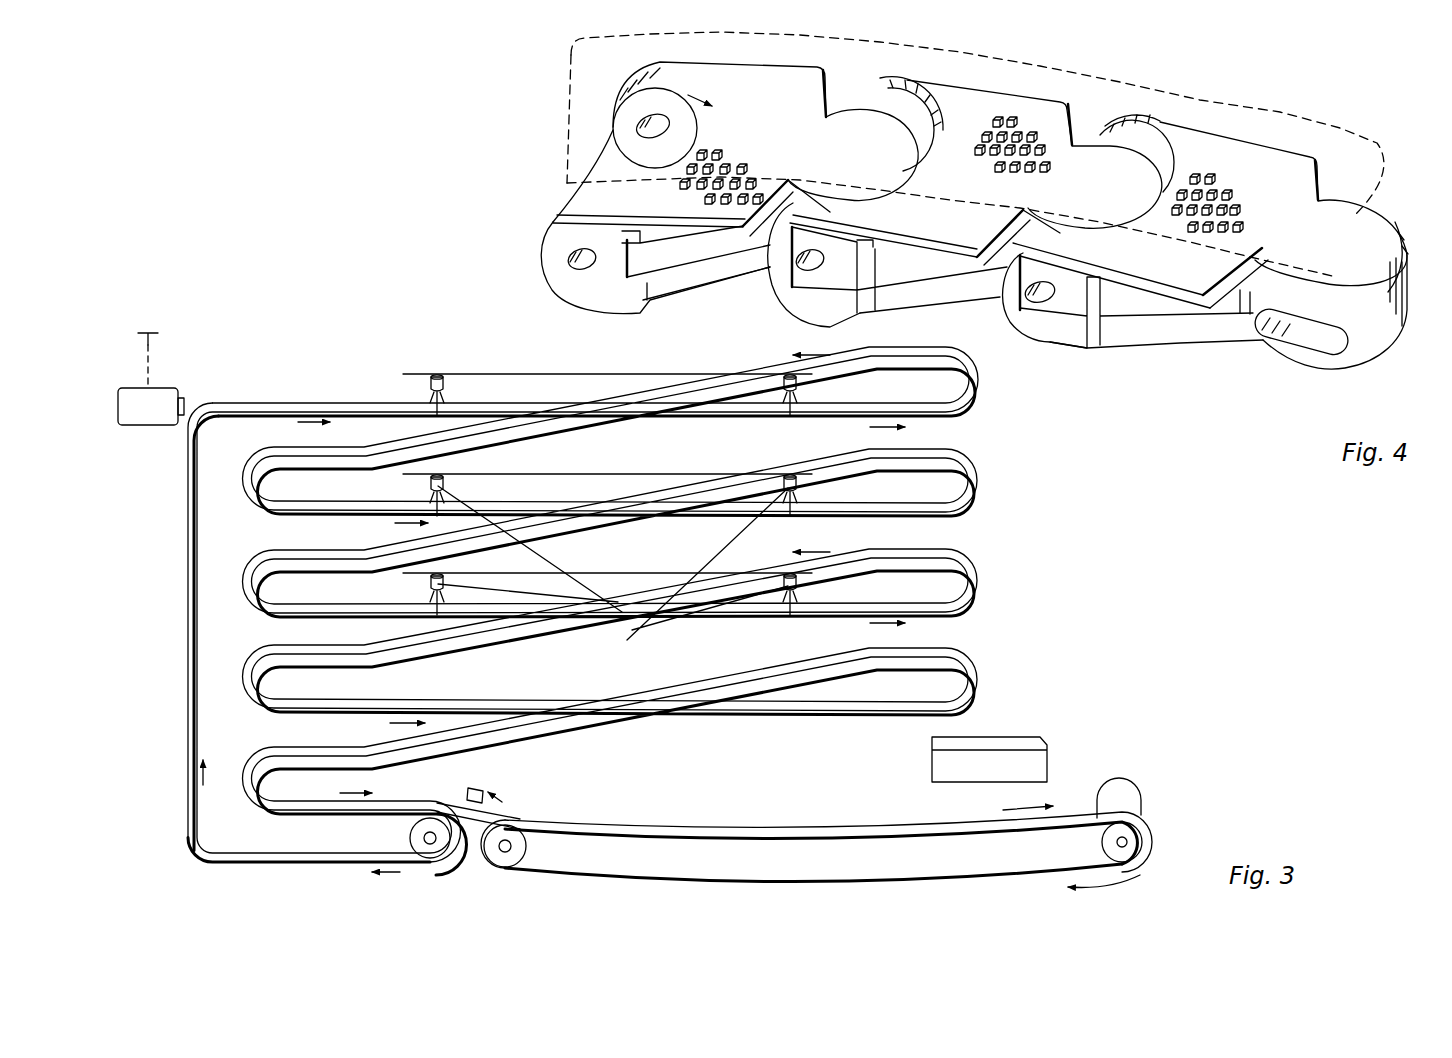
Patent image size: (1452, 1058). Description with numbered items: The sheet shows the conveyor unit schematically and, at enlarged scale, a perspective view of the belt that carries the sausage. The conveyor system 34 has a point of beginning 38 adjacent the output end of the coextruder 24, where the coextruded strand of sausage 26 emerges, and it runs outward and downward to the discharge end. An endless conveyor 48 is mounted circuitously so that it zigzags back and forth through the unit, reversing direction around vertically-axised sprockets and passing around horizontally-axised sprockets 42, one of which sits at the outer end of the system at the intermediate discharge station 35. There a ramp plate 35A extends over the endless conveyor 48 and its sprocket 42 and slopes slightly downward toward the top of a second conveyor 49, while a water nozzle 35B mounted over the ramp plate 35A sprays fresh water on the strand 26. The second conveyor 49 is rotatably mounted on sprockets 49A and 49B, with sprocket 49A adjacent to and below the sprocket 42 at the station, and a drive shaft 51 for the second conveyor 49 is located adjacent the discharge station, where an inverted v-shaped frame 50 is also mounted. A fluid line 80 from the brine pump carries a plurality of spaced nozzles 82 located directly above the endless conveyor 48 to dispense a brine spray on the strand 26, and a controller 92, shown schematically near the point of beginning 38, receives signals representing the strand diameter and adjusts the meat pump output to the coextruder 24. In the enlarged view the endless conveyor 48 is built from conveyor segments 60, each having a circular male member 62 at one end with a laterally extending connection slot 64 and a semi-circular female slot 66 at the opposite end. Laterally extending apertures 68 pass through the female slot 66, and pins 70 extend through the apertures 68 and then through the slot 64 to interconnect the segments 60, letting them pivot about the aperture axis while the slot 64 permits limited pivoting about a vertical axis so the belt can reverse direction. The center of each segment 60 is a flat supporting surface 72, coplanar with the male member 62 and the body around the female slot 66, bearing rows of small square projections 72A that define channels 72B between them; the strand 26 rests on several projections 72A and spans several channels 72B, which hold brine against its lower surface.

In FIG. 3, the coextruder 24 is at (162, 398).
In FIG. 4, the coextruded strand of sausage 26 is at (1192, 133).
In FIG. 3, the conveyor system 34 is at (300, 404).
In FIG. 3, the intermediate discharge station 35 is at (516, 783).
In FIG. 3, the ramp plate 35A is at (512, 812).
In FIG. 3, the water nozzle 35B is at (470, 792).
In FIG. 3, the point of beginning 38 is at (160, 338).
In FIG. 3, the sprocket 42 is at (430, 842).
In FIG. 3, the endless conveyor 48 is at (577, 607).
In FIG. 3, the second conveyor 49 is at (837, 829).
In FIG. 3, the sprocket 49A is at (505, 852).
In FIG. 3, the sprocket 49B is at (1120, 788).
In FIG. 3, the inverted v-shaped frame 50 is at (1000, 740).
In FIG. 3, the drive shaft 51 is at (1127, 842).
In FIG. 4, the conveyor segment 60 is at (961, 286).
In FIG. 4, the circular male member 62 is at (955, 82).
In FIG. 4, the connection slot 64 is at (1303, 330).
In FIG. 4, the semi-circular female slot 66 is at (700, 160).
In FIG. 4, the aperture 68 is at (575, 140).
In FIG. 4, the pin 70 is at (825, 312).
In FIG. 4, the flat supporting surface 72 is at (871, 104).
In FIG. 4, the projection 72A is at (909, 136).
In FIG. 4, the channel 72B is at (705, 200).
In FIG. 3, the fluid line 80 is at (440, 377).
In FIG. 3, the nozzle 82 is at (533, 470).
In FIG. 3, the controller 92 is at (152, 342).